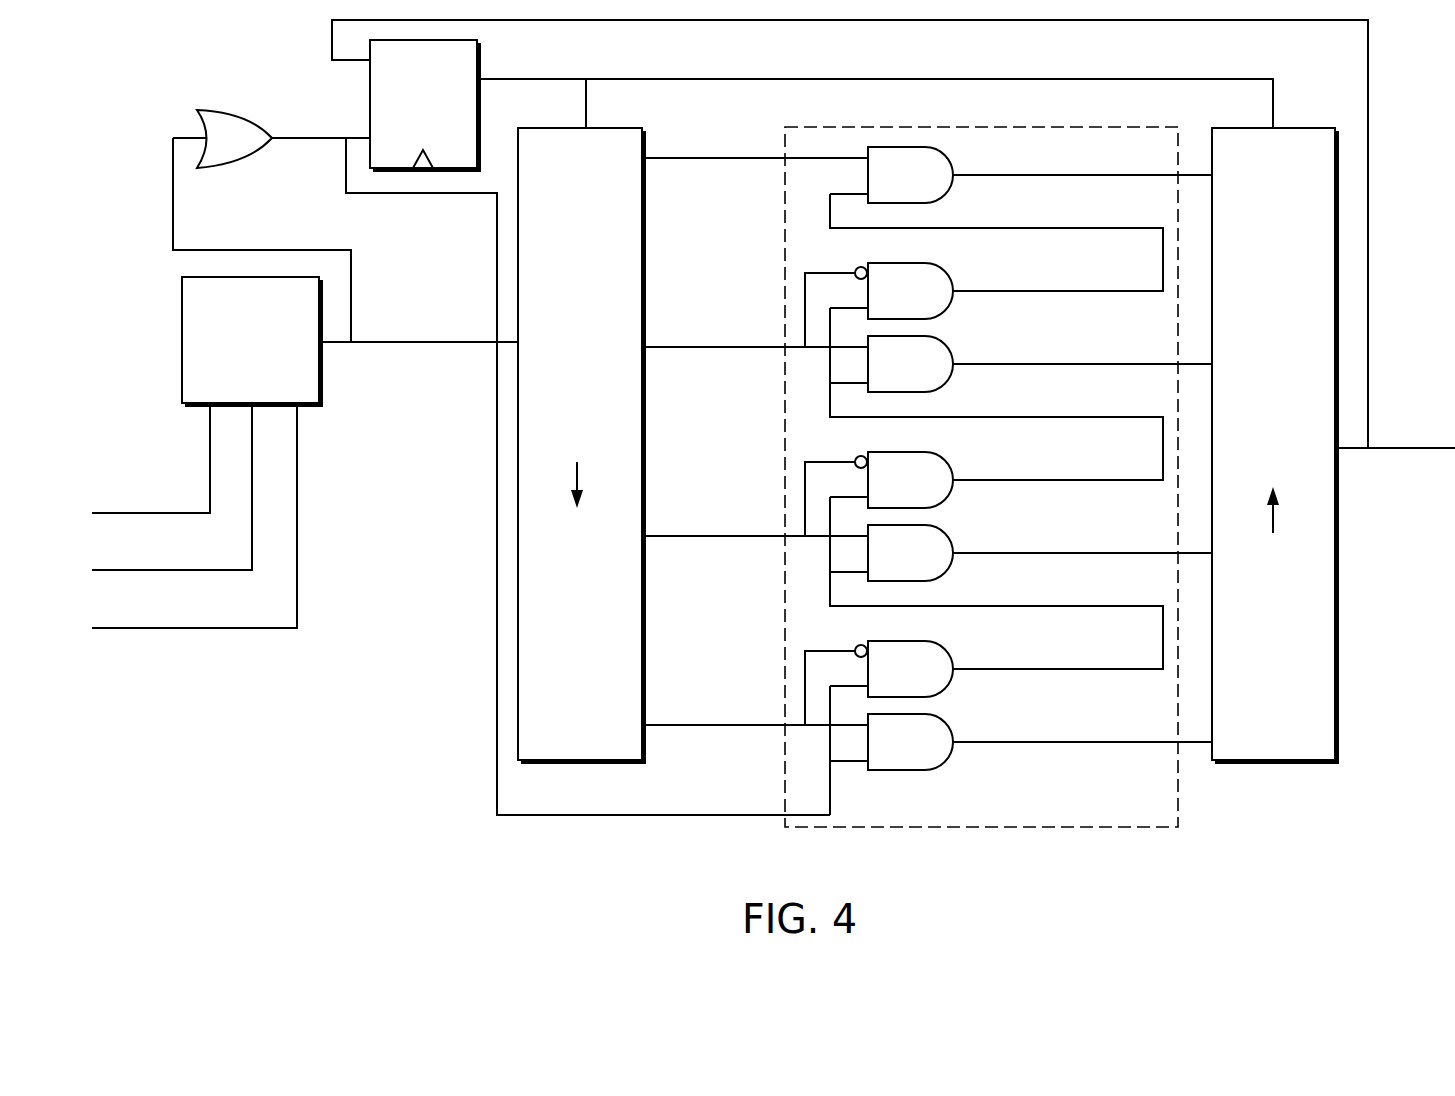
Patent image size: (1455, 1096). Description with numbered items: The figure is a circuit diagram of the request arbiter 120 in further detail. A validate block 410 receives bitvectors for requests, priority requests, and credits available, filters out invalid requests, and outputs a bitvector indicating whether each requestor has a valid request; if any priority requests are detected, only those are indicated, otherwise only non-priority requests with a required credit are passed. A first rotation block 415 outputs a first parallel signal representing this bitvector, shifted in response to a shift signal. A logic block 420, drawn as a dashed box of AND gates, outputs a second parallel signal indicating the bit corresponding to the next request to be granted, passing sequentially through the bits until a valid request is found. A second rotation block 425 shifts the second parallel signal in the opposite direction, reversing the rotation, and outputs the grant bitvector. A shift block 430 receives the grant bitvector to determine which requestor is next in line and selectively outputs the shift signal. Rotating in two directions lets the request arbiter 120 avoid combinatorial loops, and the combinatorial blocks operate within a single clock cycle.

The request arbiter 120 is at (316, 728).
The validate block 410 is at (182, 320).
The first rotation block 415 is at (575, 762).
The logic block 420 is at (980, 828).
The second rotation block 425 is at (1271, 765).
The shift block 430 is at (370, 82).